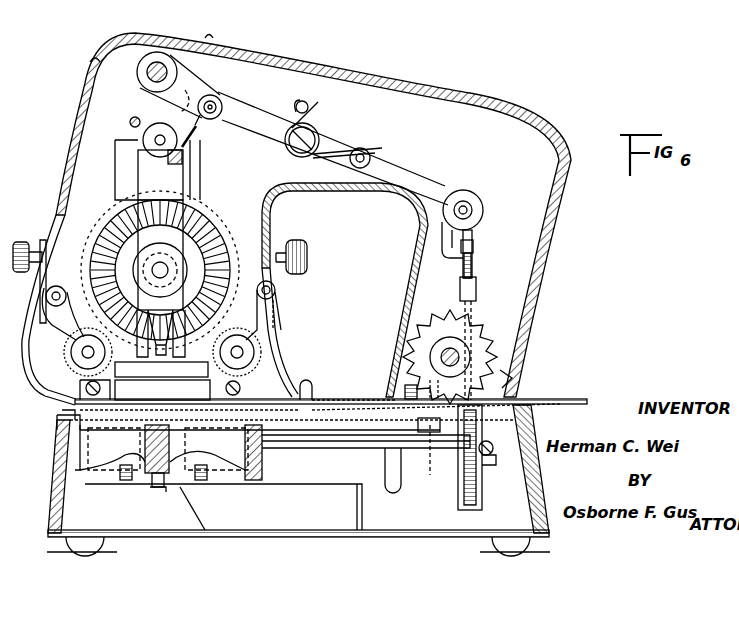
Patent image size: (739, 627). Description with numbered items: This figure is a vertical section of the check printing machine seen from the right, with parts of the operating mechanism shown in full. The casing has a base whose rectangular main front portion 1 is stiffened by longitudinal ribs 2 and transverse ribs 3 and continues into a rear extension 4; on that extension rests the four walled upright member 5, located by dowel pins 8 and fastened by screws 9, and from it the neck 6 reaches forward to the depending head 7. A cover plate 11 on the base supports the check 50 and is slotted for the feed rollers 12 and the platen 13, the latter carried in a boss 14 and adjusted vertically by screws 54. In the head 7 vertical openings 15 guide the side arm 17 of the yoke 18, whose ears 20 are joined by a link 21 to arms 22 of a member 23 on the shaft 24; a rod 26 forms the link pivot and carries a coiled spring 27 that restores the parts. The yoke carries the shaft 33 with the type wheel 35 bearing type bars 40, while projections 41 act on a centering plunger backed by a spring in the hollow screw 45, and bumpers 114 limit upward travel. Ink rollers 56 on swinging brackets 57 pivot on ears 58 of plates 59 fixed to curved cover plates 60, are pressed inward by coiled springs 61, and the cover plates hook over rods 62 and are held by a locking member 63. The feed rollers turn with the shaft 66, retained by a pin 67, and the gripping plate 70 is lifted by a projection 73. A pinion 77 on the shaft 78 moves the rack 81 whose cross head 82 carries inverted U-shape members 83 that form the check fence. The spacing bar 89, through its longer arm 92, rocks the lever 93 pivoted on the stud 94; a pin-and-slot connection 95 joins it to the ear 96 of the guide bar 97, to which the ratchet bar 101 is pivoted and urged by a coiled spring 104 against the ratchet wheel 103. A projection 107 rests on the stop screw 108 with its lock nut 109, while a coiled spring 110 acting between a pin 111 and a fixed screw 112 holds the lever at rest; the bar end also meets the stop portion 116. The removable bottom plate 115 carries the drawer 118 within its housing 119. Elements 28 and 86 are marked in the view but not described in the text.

The main front portion 1 is at (62, 470).
The longitudinally extending ribs 2 is at (256, 484).
The transversely extending ribs 3 is at (318, 484).
The rear extension 4 is at (535, 455).
The upright member 5 is at (535, 296).
The arm or neck 6 is at (372, 77).
The head 7 is at (70, 158).
The dowel pins 8 is at (514, 380).
The screws 9 is at (410, 448).
The cover plate 11 is at (57, 421).
The feed rollers 12 is at (130, 497).
The platen 13 is at (190, 440).
The boss 14 is at (140, 440).
The openings 15 is at (140, 160).
The side arm 17 is at (161, 278).
The yoke 18 is at (140, 178).
The ears 20 is at (116, 140).
The link 21 is at (176, 130).
The arms 22 is at (178, 98).
The member 23 is at (140, 78).
The shaft 24 is at (155, 62).
The rod 26 is at (215, 118).
The coiled spring 27 is at (224, 102).
The pin 28 is at (129, 121).
The shaft 33 is at (160, 262).
The type wheel 35 is at (262, 210).
The type bars 40 is at (262, 232).
The projections 41 is at (108, 214).
The hollow screw 45 is at (168, 160).
The check 50 is at (24, 405).
The screws 54 is at (162, 490).
The ink rollers 56 is at (66, 357).
The swinging brackets 57 is at (150, 348).
The ears 58 is at (161, 299).
The plates 59 is at (290, 292).
The cover plates 60 is at (292, 326).
The coiled springs 61 is at (277, 332).
The rods 62 is at (86, 386).
The locking member 63 is at (26, 240).
The shaft 66 is at (368, 450).
The pin or screw 67 is at (78, 437).
The plate 70 is at (162, 390).
The projection 73 is at (161, 372).
The pinion 77 is at (480, 341).
The shaft 78 is at (452, 352).
The rack 81 is at (545, 399).
The cross head 82 is at (322, 400).
The inverted U-shape members 83 is at (306, 385).
The pin 86 is at (150, 316).
The spacing bar 89 is at (130, 190).
The longer arm 92 is at (196, 128).
The lever 93 is at (414, 157).
The stud 94 is at (316, 133).
The pin-and-slot connection 95 is at (475, 211).
The ear 96 is at (440, 245).
The guide bar 97 is at (462, 312).
The ratchet bar 101 is at (478, 310).
The ratchet wheel 103 is at (490, 468).
The coiled spring 104 is at (473, 270).
The projection 107 is at (408, 380).
The stop screw 108 is at (405, 392).
The lock nut 109 is at (437, 455).
The coiled spring 110 is at (335, 158).
The pin 111 is at (368, 163).
The screw 112 is at (309, 98).
The bumpers 114 is at (183, 158).
The bottom plate 115 is at (302, 537).
The stop portion 116 is at (466, 508).
The drawer 118 is at (99, 514).
The housing 119 is at (202, 508).